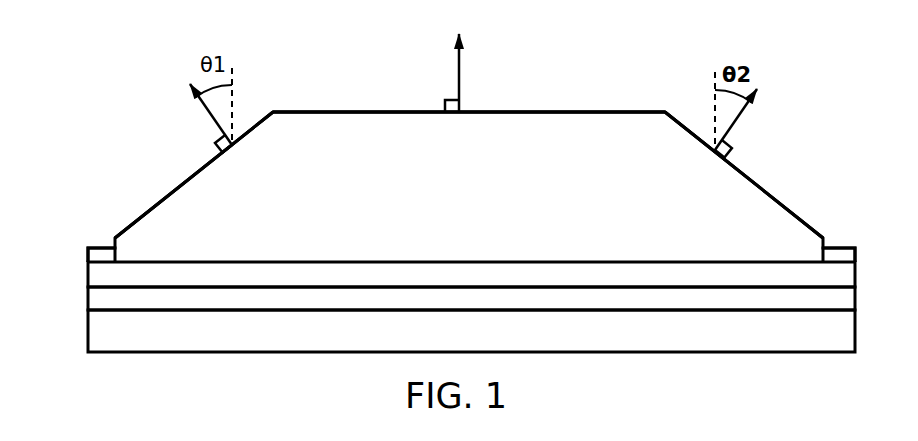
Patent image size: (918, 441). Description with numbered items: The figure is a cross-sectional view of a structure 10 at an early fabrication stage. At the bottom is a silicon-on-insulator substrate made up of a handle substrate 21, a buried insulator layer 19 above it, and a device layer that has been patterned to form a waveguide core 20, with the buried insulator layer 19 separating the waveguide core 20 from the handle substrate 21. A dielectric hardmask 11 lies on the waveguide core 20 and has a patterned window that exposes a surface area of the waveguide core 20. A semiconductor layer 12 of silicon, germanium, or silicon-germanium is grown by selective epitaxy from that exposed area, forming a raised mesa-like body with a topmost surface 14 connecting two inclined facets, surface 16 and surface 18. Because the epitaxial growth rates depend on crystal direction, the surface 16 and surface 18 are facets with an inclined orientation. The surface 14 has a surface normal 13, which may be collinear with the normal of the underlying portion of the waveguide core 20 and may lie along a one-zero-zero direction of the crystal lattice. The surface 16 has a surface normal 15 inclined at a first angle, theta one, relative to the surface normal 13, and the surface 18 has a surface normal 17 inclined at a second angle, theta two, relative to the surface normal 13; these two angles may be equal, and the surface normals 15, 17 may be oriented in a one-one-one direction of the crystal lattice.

The structure 10 is at (116, 51).
The dielectric hardmask 11 is at (107, 255).
The semiconductor layer 12 is at (283, 177).
The surface normal 13 is at (459, 58).
The surface 14 is at (539, 112).
The surface normal 15 is at (208, 110).
The surface 16 is at (160, 202).
The surface normal 17 is at (740, 117).
The surface 18 is at (744, 173).
The buried insulator layer 19 is at (152, 304).
The waveguide core 20 is at (152, 278).
The handle substrate 21 is at (152, 334).